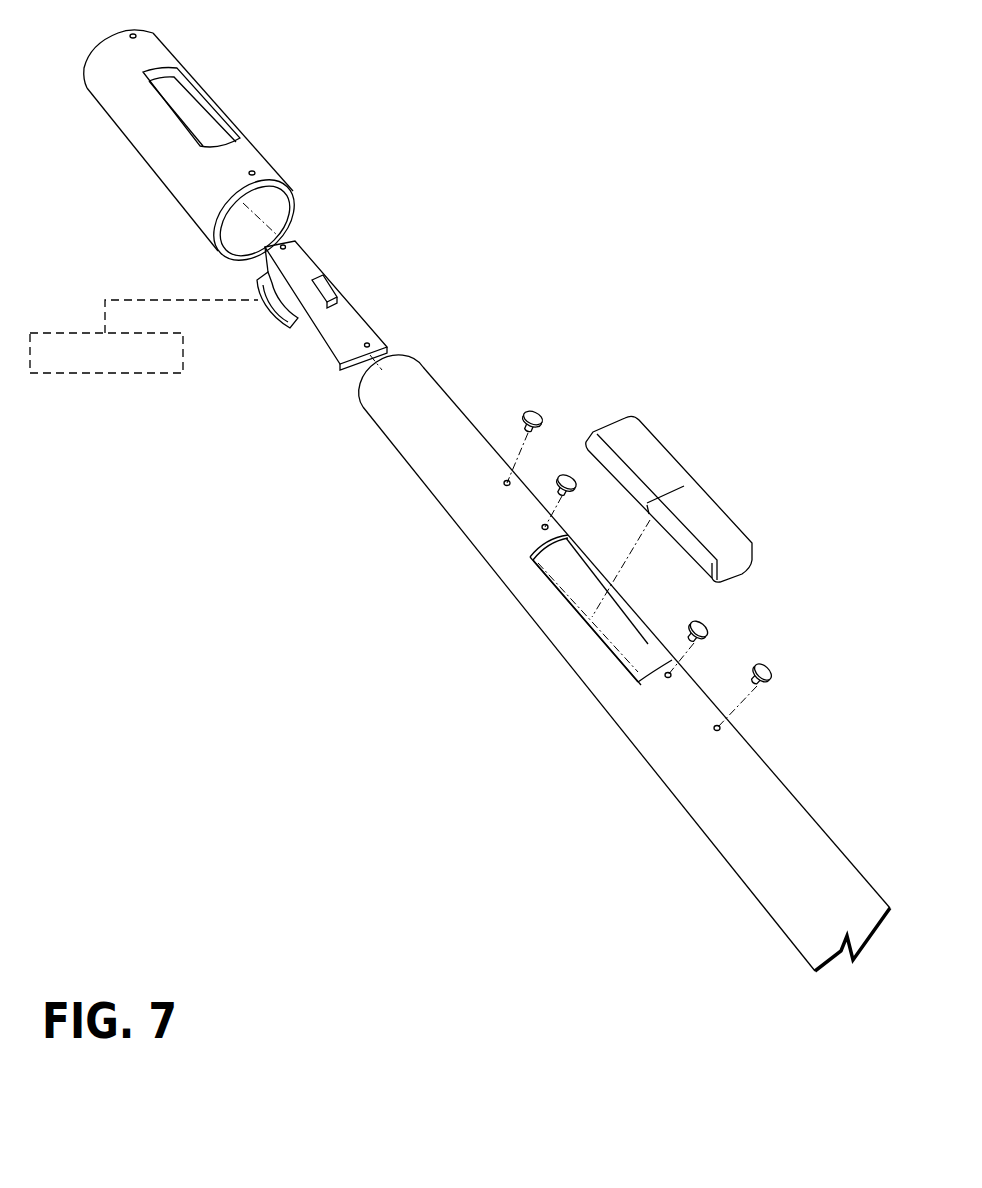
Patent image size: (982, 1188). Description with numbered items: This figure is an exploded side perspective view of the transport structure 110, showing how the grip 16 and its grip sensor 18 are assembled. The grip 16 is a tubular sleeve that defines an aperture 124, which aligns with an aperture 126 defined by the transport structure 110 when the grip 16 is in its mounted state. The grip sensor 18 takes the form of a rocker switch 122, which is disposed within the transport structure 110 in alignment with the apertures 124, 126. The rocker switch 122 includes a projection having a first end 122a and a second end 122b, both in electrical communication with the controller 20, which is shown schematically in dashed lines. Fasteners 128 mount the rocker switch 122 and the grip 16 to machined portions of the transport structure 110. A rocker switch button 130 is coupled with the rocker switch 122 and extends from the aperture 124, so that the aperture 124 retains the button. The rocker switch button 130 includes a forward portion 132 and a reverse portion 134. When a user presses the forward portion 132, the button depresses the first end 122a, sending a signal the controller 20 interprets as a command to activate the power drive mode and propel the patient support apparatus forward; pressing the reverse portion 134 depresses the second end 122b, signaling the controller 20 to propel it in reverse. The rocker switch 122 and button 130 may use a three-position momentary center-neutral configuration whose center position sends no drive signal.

The grip 16 is at (238, 163).
The grip sensor 18 is at (397, 232).
The controller 20 is at (95, 373).
The transport structure 110 is at (475, 612).
The rocker switch 122 is at (358, 318).
The first end 122a is at (312, 278).
The second end 122b is at (305, 322).
The aperture 124 is at (193, 118).
The aperture 126 is at (630, 648).
The fasteners 128 is at (563, 473).
The rocker switch button 130 is at (715, 463).
The forward portion 132 is at (640, 448).
The reverse portion 134 is at (716, 527).